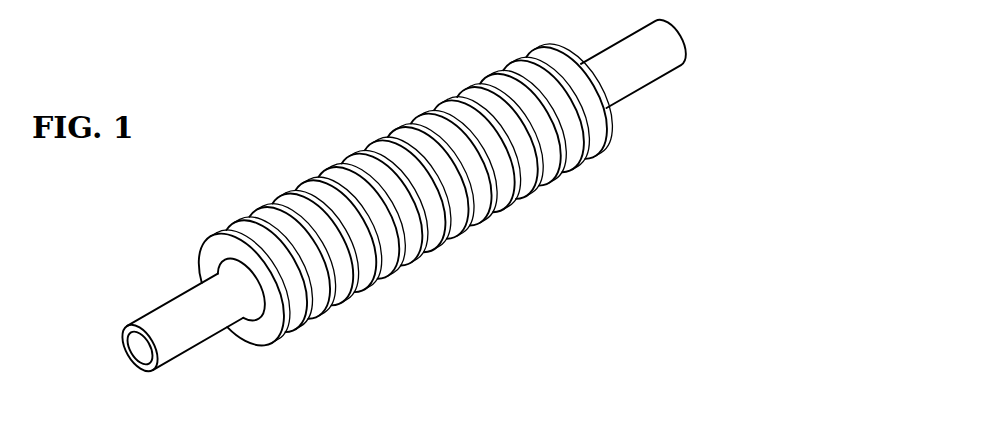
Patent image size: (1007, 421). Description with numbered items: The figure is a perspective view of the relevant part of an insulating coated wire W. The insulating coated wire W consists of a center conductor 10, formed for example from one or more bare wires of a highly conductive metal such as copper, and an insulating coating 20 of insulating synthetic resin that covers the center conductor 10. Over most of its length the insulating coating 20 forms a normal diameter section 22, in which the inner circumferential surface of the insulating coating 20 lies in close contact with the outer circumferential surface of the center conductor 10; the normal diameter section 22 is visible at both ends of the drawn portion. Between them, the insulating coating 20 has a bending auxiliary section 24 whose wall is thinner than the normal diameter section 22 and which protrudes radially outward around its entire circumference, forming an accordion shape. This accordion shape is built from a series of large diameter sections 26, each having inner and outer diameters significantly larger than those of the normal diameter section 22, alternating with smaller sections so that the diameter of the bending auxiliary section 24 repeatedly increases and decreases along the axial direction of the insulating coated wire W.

The insulating coated wire W is at (356, 212).
The center conductor 10 is at (136, 348).
The insulating coating 20 is at (123, 332).
The normal diameter section 22 is at (194, 341).
The bending auxiliary section 24 is at (406, 208).
The large diameter section 26 is at (337, 290).